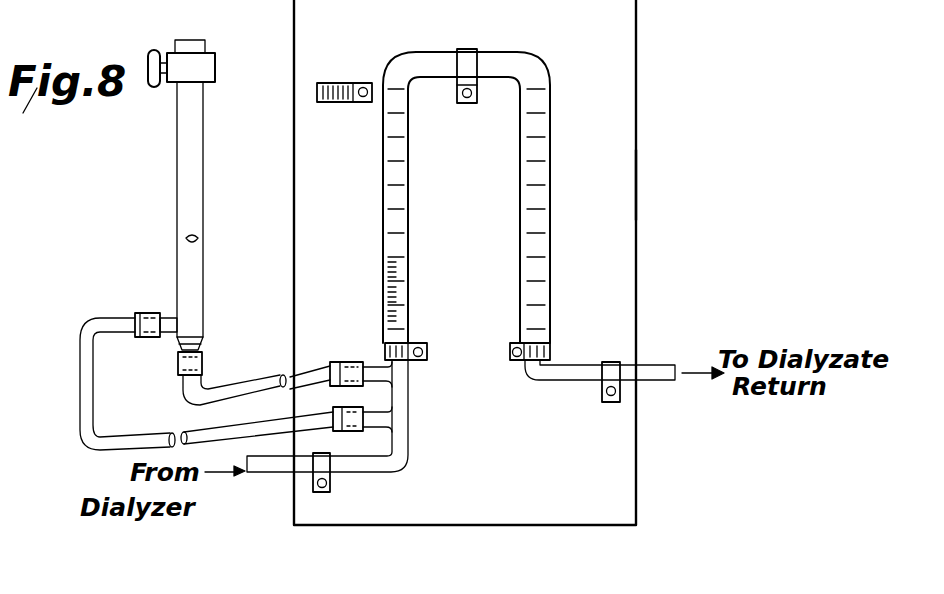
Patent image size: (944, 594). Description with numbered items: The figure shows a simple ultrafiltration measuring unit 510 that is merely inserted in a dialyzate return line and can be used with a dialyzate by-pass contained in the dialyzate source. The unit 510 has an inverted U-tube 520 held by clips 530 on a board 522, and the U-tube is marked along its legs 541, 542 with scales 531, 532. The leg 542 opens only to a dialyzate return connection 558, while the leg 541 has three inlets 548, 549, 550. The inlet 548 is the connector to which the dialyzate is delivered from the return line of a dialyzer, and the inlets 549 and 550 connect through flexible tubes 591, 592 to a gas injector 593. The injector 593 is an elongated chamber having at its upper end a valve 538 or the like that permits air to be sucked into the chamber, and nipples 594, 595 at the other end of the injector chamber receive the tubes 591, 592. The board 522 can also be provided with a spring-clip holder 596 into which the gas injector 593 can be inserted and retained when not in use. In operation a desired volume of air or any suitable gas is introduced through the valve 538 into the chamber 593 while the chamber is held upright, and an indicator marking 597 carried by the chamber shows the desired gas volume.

The ultrafiltration measuring unit 510 is at (339, 538).
The inverted U-tube 520 is at (504, 197).
The board 522 is at (610, 184).
The clips 530 is at (468, 62).
The scale 531 is at (391, 250).
The scale 532 is at (528, 250).
The valve 538 is at (184, 60).
The leg 541 is at (408, 337).
The leg 542 is at (527, 334).
The inlet 548 is at (263, 477).
The inlet 549 is at (391, 426).
The inlet 550 is at (376, 367).
The dialyzate return connection 558 is at (652, 374).
The flexible tube 591 is at (234, 428).
The flexible tube 592 is at (228, 389).
The gas injector 593 is at (193, 162).
The nipple 594 is at (168, 302).
The nipple 595 is at (201, 350).
The spring-clip holder 596 is at (327, 83).
The indicator marking 597 is at (204, 239).